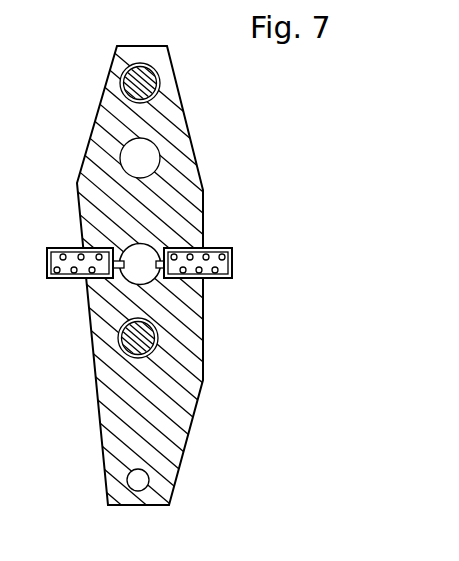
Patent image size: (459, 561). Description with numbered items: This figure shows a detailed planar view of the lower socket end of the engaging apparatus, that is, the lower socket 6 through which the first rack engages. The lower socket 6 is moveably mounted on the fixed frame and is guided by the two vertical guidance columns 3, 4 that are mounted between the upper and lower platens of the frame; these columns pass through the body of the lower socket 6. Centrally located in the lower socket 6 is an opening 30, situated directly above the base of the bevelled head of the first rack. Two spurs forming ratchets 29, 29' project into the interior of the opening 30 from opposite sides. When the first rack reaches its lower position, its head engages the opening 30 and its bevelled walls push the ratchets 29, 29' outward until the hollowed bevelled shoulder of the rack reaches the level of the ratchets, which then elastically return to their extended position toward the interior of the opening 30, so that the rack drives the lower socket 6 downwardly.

The guidance column 3 is at (146, 93).
The guidance column 4 is at (130, 339).
The lower socket 6 is at (183, 193).
The ratchet 29 is at (203, 288).
The ratchet 29' is at (74, 288).
The opening 30 is at (143, 255).